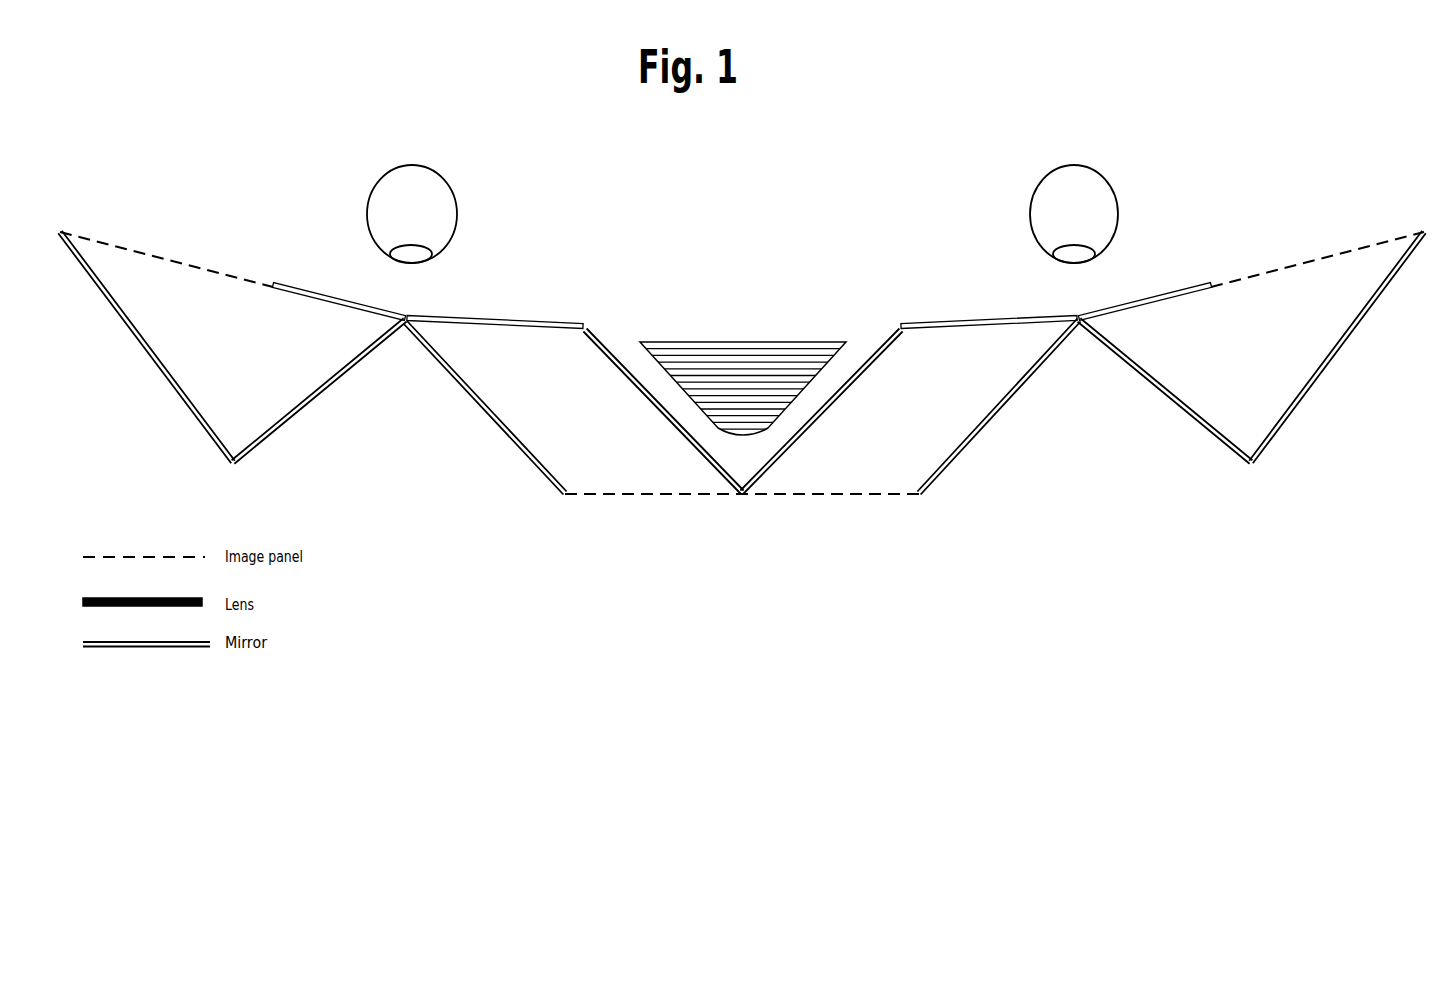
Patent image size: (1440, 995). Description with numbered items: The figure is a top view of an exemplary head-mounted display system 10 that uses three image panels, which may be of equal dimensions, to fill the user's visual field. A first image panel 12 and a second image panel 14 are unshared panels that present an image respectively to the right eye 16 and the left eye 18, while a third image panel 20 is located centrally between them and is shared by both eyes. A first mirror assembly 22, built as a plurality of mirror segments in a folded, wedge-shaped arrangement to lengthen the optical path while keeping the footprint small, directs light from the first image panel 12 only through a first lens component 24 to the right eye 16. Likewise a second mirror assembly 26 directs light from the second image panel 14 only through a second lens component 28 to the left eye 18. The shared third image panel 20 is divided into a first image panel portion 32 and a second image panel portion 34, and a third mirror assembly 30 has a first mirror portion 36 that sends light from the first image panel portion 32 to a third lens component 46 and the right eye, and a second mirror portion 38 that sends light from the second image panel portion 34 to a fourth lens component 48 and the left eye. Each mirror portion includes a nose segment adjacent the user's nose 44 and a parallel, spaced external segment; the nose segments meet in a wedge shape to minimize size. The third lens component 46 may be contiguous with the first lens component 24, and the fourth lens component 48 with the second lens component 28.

The head-mounted display system 10 is at (860, 180).
The first image panel 12 is at (207, 272).
The second image panel 14 is at (1288, 267).
The right eye 16 is at (455, 207).
The left eye 18 is at (1115, 218).
The third image panel 20 is at (760, 519).
The first mirror assembly 22 is at (290, 452).
The first lens component 24 is at (288, 290).
The second mirror assembly 26 is at (1273, 479).
The second lens component 28 is at (1180, 292).
The third mirror assembly 30 is at (500, 475).
The first image panel portion 32 is at (633, 497).
The second image panel portion 34 is at (877, 500).
The first mirror portion 36 is at (600, 352).
The second mirror portion 38 is at (880, 357).
The user's nose 44 is at (770, 341).
The third lens component 46 is at (530, 323).
The fourth lens component 48 is at (943, 323).